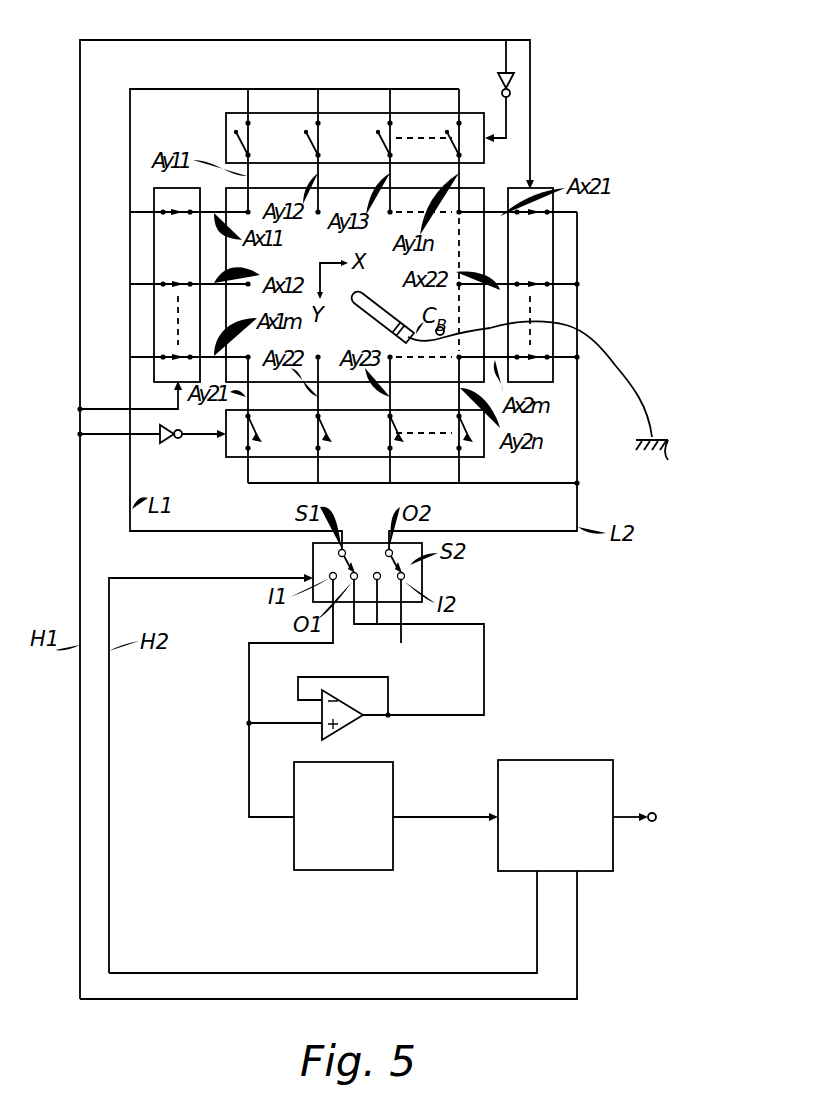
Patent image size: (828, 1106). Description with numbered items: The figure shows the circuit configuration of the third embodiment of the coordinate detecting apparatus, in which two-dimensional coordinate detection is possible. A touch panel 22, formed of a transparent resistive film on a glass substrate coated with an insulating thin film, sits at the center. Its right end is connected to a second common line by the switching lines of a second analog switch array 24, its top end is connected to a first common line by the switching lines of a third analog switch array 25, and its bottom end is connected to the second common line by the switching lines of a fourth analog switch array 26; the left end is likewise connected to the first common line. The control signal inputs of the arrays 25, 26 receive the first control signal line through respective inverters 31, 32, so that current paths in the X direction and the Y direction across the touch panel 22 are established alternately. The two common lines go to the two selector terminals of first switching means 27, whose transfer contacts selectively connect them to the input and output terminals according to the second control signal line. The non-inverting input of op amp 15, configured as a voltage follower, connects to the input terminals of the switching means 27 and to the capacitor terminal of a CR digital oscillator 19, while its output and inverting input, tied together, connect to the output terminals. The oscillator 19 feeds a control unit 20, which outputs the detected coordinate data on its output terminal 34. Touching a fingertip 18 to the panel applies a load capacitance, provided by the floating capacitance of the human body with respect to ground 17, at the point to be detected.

The op amp 15 is at (350, 712).
The ground 17 is at (653, 471).
The fingertip 18 is at (378, 287).
The CR digital oscillator 19 is at (305, 762).
The control unit 20 is at (577, 760).
The input panel (touch panel) 22 is at (470, 195).
The second analog switch array 24 is at (553, 246).
The third analog switch array 25 is at (362, 120).
The fourth analog switch array 26 is at (340, 460).
The first switching means 27 is at (422, 579).
The inverter 31 is at (513, 78).
The inverter 32 is at (172, 447).
The output terminal 34 is at (653, 812).